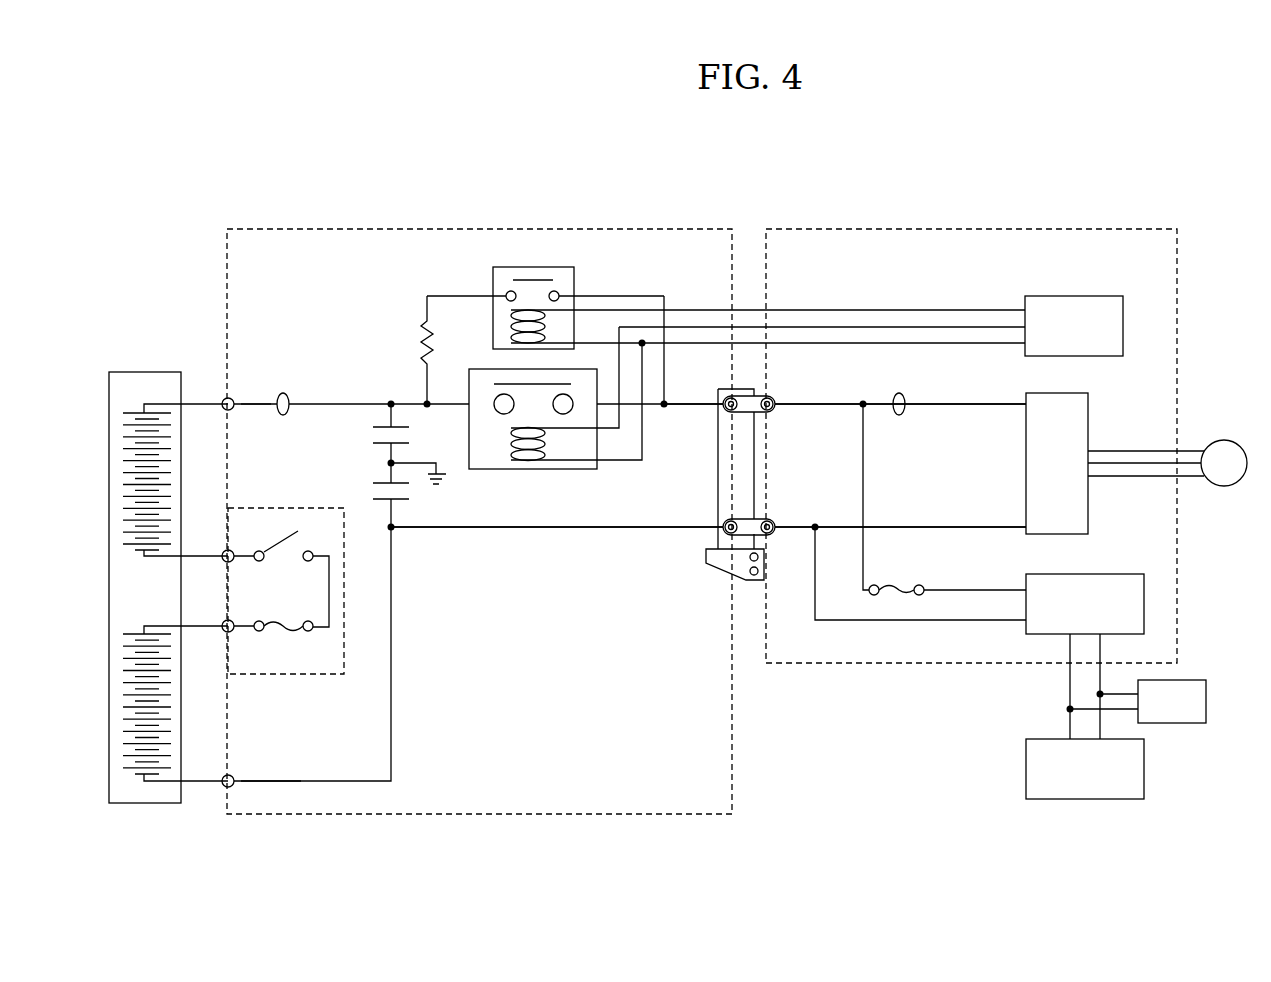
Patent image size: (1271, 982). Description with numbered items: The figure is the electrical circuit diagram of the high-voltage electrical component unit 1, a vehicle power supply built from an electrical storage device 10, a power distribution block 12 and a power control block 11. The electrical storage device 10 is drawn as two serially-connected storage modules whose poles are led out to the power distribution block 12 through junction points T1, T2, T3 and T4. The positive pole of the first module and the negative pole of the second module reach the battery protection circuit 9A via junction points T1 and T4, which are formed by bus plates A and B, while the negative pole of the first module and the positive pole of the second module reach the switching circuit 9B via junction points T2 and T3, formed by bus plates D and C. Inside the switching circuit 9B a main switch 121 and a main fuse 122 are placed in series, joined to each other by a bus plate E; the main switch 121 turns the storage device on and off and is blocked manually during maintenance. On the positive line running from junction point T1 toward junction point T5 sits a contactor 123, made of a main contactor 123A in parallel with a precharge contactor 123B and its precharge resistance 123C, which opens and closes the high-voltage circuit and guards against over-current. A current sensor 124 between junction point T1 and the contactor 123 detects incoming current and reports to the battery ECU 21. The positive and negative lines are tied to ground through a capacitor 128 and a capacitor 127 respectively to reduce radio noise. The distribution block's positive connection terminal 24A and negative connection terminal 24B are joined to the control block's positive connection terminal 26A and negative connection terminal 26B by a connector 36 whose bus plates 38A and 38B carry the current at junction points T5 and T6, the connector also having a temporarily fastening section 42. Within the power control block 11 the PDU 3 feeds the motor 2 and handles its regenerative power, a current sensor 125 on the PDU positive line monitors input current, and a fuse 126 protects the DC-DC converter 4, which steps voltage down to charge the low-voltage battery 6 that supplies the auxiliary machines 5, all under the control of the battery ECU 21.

The high-voltage electrical component unit 1 is at (820, 195).
The motor 2 is at (1213, 440).
The PDU 3 is at (1087, 415).
The DC-DC converter 4 is at (1115, 573).
The auxiliary machines 5 is at (1143, 765).
The low-voltage battery 6 is at (1205, 698).
The battery protection circuit 9A is at (672, 278).
The switching circuit 9B is at (342, 662).
The electrical storage device 10 is at (135, 368).
The power control block 11 is at (122, 447).
The power distribution block 12 is at (122, 700).
The battery ECU 21 is at (1085, 295).
The positive connection terminal 24A is at (700, 401).
The negative connection terminal 24B is at (652, 529).
The positive connection terminal 26A is at (800, 402).
The negative connection terminal 26B is at (795, 524).
The connector 36 is at (753, 447).
The bus plate 38A is at (745, 410).
The bus plate 38B is at (745, 520).
The temporarily fastening section 42 is at (738, 574).
The main switch 121 is at (275, 542).
The main fuse 122 is at (290, 632).
The contactor 123 is at (575, 292).
The main contactor 123A is at (562, 468).
The precharge contactor 123B is at (492, 268).
The precharge resistance 123C is at (420, 340).
The current sensor 124 is at (285, 392).
The current sensor 125 is at (905, 393).
The fuse 126 is at (890, 583).
The capacitor 127 is at (408, 498).
The capacitor 128 is at (372, 430).
The junction point T1 is at (222, 399).
The junction point T2 is at (222, 552).
The junction point T3 is at (222, 631).
The junction point T4 is at (222, 786).
The junction point T5 is at (760, 398).
The junction point T6 is at (763, 534).
The bus plate A is at (262, 400).
The bus plate B is at (283, 778).
The bus plate C is at (258, 632).
The bus plate D is at (240, 558).
The bus plate E is at (330, 582).